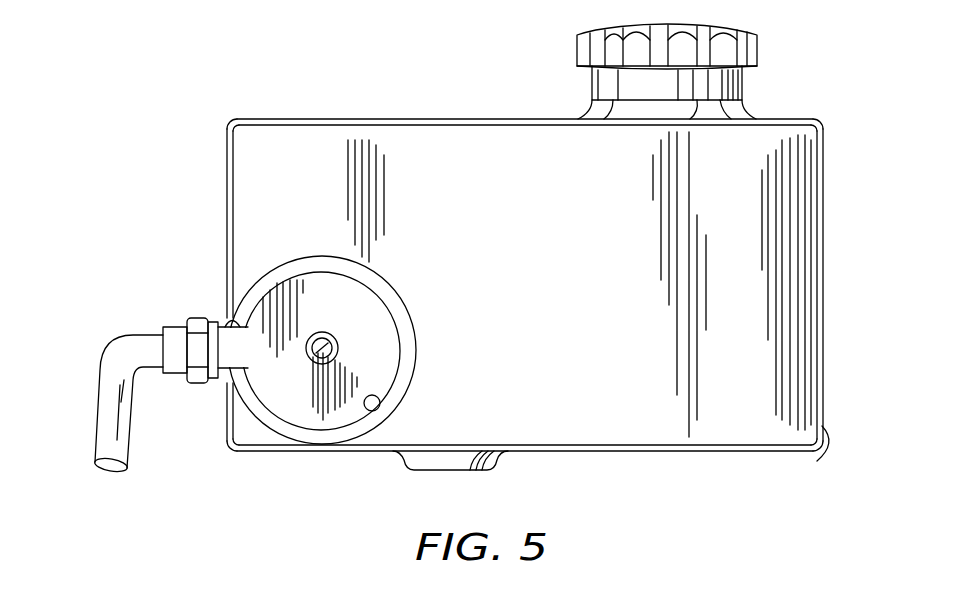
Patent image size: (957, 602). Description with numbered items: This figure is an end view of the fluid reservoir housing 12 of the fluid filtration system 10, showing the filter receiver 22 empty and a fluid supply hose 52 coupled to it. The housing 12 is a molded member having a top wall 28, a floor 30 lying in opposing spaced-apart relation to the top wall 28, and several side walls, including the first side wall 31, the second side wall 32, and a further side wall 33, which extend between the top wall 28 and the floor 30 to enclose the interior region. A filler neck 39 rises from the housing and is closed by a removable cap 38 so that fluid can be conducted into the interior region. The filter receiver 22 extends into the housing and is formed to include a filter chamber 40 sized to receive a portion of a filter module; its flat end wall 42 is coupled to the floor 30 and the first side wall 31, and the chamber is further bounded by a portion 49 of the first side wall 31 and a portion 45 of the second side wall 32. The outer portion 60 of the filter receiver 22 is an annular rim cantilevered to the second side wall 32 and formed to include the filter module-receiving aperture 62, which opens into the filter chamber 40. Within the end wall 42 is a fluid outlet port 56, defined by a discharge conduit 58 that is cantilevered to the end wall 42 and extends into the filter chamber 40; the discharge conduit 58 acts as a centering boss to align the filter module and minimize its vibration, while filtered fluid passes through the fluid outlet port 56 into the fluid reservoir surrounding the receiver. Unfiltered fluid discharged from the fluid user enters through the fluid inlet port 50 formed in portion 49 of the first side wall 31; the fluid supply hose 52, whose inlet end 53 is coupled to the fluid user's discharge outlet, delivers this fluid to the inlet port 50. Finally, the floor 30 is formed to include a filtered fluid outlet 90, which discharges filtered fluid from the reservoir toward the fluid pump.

The fluid filtration system 10 is at (196, 146).
The fluid reservoir housing 12 is at (786, 116).
The filter receiver 22 is at (424, 311).
The top wall 28 is at (447, 119).
The floor 30 is at (277, 447).
The first side wall 31 is at (226, 200).
The second side wall 32 is at (528, 270).
The side wall 33 is at (816, 460).
The removable cap 38 is at (562, 47).
The filler neck 39 is at (618, 108).
The filter chamber 40 is at (345, 298).
The end wall 42 is at (378, 330).
The portion of second side wall 45 is at (256, 435).
The portion of first side wall 49 is at (226, 408).
The fluid inlet port 50 is at (229, 320).
The fluid supply hose 52 is at (91, 406).
The inlet end 53 is at (150, 332).
The fluid outlet port 56 is at (329, 336).
The discharge conduit 58 is at (303, 355).
The outer portion 60 is at (417, 370).
The filter module-receiving aperture 62 is at (380, 403).
The filtered fluid outlet 90 is at (430, 462).